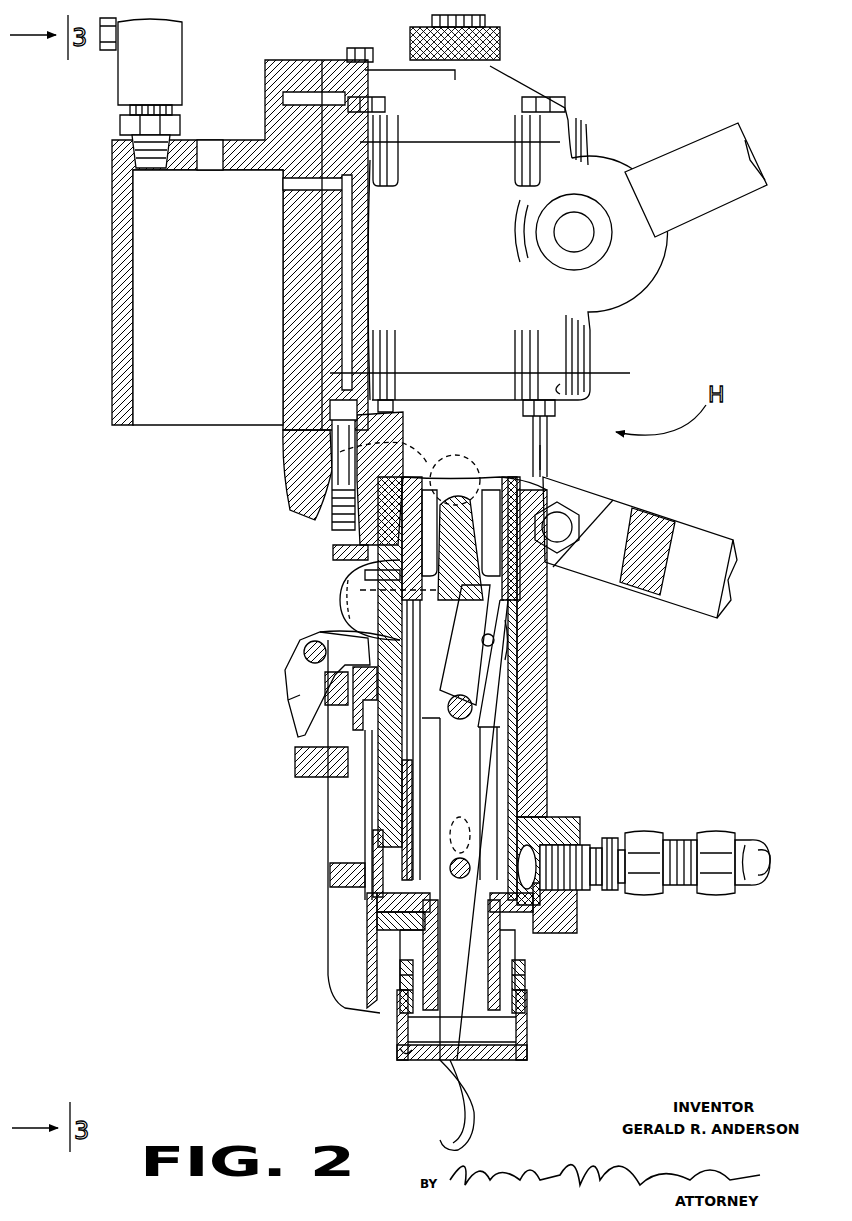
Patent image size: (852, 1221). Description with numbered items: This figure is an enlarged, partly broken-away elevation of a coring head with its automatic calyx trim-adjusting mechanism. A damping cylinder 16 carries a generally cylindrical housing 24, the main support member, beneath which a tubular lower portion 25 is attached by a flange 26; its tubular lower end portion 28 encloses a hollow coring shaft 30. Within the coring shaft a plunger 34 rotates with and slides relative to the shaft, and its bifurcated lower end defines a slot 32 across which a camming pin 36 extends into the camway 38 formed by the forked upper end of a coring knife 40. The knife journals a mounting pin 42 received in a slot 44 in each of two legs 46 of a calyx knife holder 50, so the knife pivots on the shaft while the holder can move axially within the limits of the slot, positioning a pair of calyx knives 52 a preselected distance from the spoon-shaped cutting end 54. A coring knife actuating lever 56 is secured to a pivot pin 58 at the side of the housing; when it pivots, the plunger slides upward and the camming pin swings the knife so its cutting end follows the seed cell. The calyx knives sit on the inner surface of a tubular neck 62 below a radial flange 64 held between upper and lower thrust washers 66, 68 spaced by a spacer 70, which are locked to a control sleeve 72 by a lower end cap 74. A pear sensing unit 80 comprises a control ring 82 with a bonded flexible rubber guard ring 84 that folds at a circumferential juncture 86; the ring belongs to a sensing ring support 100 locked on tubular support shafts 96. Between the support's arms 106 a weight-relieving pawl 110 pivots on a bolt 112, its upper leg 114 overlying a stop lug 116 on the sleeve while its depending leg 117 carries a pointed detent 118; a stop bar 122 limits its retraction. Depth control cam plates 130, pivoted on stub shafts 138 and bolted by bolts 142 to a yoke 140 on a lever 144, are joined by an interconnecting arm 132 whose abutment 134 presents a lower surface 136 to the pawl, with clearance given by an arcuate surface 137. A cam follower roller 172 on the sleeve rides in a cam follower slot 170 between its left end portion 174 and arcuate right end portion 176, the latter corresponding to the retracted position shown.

The damping cylinder 16 is at (210, 289).
The housing 24 is at (472, 301).
The lower portion of the coring head 25 is at (545, 455).
The flange 26 is at (558, 387).
The tubular lower end portion 28 is at (525, 627).
The coring shaft 30 is at (520, 487).
The slot 32 is at (512, 720).
The plunger 34 is at (470, 500).
The camming pin 36 is at (465, 706).
The camway 38 is at (495, 640).
The coring knife 40 is at (472, 780).
The mounting pin 42 is at (465, 880).
The slot 44 is at (470, 822).
The legs 46 is at (490, 790).
The calyx knife holder 50 is at (540, 810).
The calyx knives 52 is at (490, 1020).
The spoon-shaped cutting end 54 is at (450, 1097).
The coring knife actuating lever 56 is at (712, 183).
The pivot pin 58 is at (574, 250).
The tubular neck 62 is at (525, 948).
The radial flange 64 is at (577, 914).
The upper thrust washer 66 is at (380, 897).
The lower thrust washer 68 is at (385, 922).
The spacer 70 is at (385, 912).
The control sleeve 72 is at (540, 745).
The lower end cap 74 is at (375, 850).
The pear sensing unit 80 is at (385, 1014).
The control ring 82 is at (520, 1000).
The flexible rubber guard ring 84 is at (410, 1058).
The circumferential juncture 86 is at (527, 1046).
The tubular support shaft 96 is at (368, 958).
The sensing ring support 100 is at (328, 795).
The arms 106 is at (328, 742).
The weight-relieving pawl 110 is at (300, 668).
The bolt 112 is at (305, 650).
The upper leg 114 is at (340, 634).
The stop lug 116 is at (465, 662).
The depending leg 117 is at (295, 688).
The pointed detent 118 is at (318, 725).
The stop bar 122 is at (328, 698).
The depth control cam plate 130 is at (340, 600).
The interconnecting arm 132 is at (400, 412).
The abutment 134 is at (300, 440).
The lower surface 136 is at (298, 515).
The arcuate surface 137 is at (330, 548).
The stub shaft 138 is at (455, 461).
The yoke 140 is at (630, 510).
The bolt 142 is at (575, 540).
The lever 144 is at (698, 530).
The cam follower slot 170 is at (345, 582).
The cam follower roller 172 is at (360, 592).
The left end portion 174 is at (365, 572).
The right end portion 176 is at (548, 604).